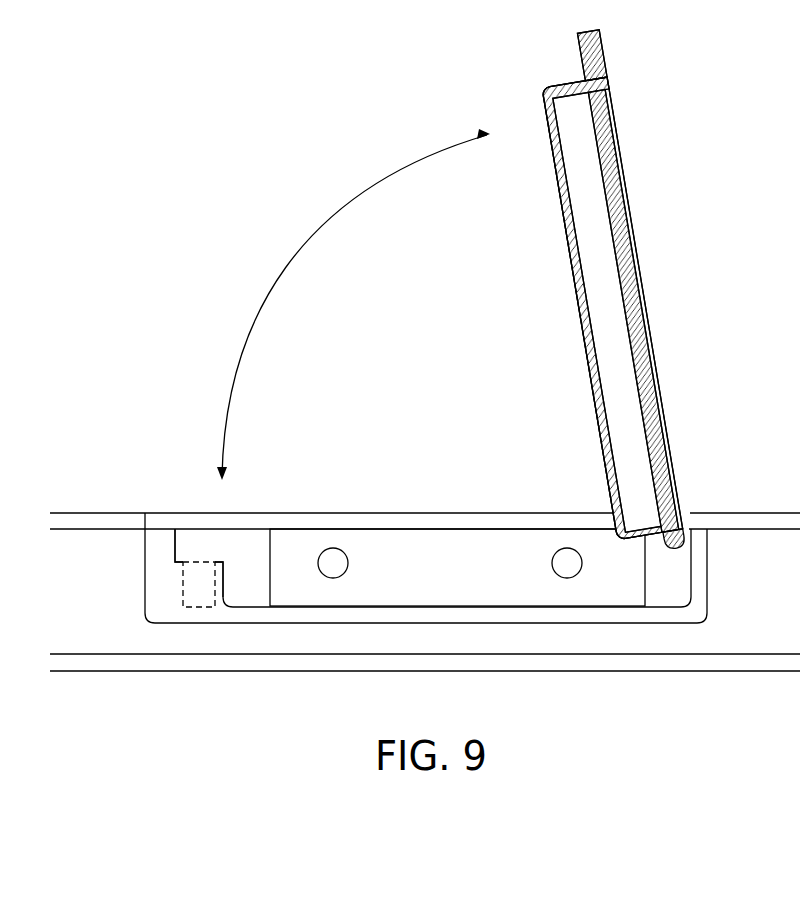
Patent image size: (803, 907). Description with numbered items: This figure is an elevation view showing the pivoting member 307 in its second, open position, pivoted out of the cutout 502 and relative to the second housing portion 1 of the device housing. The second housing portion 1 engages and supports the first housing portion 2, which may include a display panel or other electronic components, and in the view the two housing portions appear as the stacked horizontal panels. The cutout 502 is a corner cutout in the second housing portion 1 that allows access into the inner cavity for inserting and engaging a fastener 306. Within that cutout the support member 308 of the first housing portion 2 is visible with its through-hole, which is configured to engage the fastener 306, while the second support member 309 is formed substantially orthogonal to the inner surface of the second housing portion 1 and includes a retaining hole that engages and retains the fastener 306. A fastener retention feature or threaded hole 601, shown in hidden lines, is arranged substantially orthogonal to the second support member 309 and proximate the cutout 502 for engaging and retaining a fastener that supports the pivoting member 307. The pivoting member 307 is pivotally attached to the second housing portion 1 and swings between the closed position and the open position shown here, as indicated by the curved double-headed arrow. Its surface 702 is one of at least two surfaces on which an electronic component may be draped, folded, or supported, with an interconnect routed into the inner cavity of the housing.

The second housing portion 1 is at (727, 522).
The first housing portion 2 is at (563, 693).
The fastener 306 is at (335, 567).
The pivoting member 307 is at (600, 46).
The support member 308 is at (478, 592).
The second support member 309 is at (260, 553).
The cutout 502 is at (424, 480).
The fastener retention feature or threaded hole 601 is at (198, 590).
The surface of the pivoting member 702 is at (650, 471).